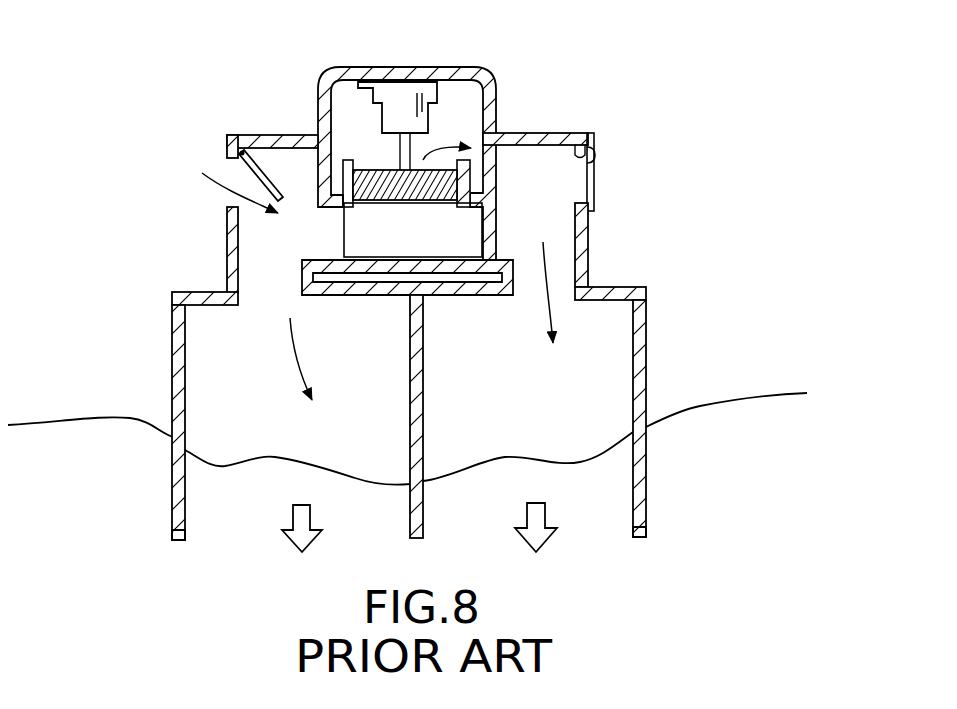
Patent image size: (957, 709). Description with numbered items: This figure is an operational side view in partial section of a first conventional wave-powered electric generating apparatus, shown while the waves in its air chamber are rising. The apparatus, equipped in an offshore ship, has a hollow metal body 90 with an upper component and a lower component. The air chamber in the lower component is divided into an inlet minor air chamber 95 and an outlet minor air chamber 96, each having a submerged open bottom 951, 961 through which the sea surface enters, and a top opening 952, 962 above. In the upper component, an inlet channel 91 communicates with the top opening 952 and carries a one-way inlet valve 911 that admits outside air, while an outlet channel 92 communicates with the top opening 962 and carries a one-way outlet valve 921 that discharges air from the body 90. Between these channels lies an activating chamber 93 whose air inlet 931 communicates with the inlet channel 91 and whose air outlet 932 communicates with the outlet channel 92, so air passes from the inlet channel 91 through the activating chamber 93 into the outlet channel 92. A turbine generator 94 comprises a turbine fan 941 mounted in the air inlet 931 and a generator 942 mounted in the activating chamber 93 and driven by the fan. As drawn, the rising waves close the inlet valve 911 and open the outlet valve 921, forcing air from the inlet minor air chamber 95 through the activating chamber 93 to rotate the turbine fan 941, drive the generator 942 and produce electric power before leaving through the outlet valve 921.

The body 90 is at (410, 308).
The inlet channel 91 is at (225, 206).
The inlet valve 911 is at (232, 160).
The outlet channel 92 is at (612, 245).
The outlet valve 921 is at (594, 167).
The activating chamber 93 is at (430, 284).
The air inlet 931 is at (402, 200).
The air outlet 932 is at (503, 153).
The turbine generator 94 is at (367, 144).
The turbine fan 941 is at (392, 172).
The generator 942 is at (400, 100).
The inlet minor air chamber 95 is at (174, 440).
The open bottom 951 is at (188, 518).
The top opening 952 is at (240, 293).
The outlet minor air chamber 96 is at (642, 429).
The open bottom 961 is at (630, 523).
The top opening 962 is at (578, 275).